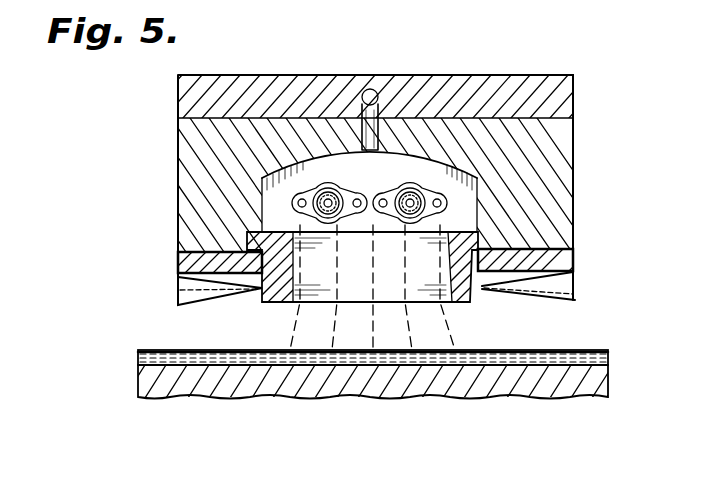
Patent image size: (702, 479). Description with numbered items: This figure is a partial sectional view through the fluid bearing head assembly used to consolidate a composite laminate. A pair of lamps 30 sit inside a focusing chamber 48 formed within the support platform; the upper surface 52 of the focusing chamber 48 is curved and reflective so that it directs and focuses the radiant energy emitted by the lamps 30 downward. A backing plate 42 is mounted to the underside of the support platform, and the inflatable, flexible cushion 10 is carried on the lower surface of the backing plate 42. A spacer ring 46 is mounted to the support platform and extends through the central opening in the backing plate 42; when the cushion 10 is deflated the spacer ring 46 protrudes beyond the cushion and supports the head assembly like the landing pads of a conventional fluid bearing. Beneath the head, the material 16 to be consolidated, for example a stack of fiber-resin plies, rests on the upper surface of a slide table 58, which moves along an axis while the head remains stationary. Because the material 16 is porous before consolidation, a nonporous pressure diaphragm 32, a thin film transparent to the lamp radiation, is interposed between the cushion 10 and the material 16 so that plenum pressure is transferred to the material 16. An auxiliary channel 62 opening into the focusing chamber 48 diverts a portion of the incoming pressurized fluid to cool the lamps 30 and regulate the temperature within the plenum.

The inflatable cushion 10 is at (556, 313).
The material 16 is at (407, 362).
The lamps 30 is at (420, 207).
The pressure diaphragm 32 is at (142, 350).
The backing plate 42 is at (575, 262).
The spacer ring 46 is at (268, 306).
The focusing chamber 48 is at (283, 187).
The upper surface of the focusing chamber 52 is at (400, 157).
The slide table 58 is at (155, 388).
The auxiliary channel 62 is at (372, 90).